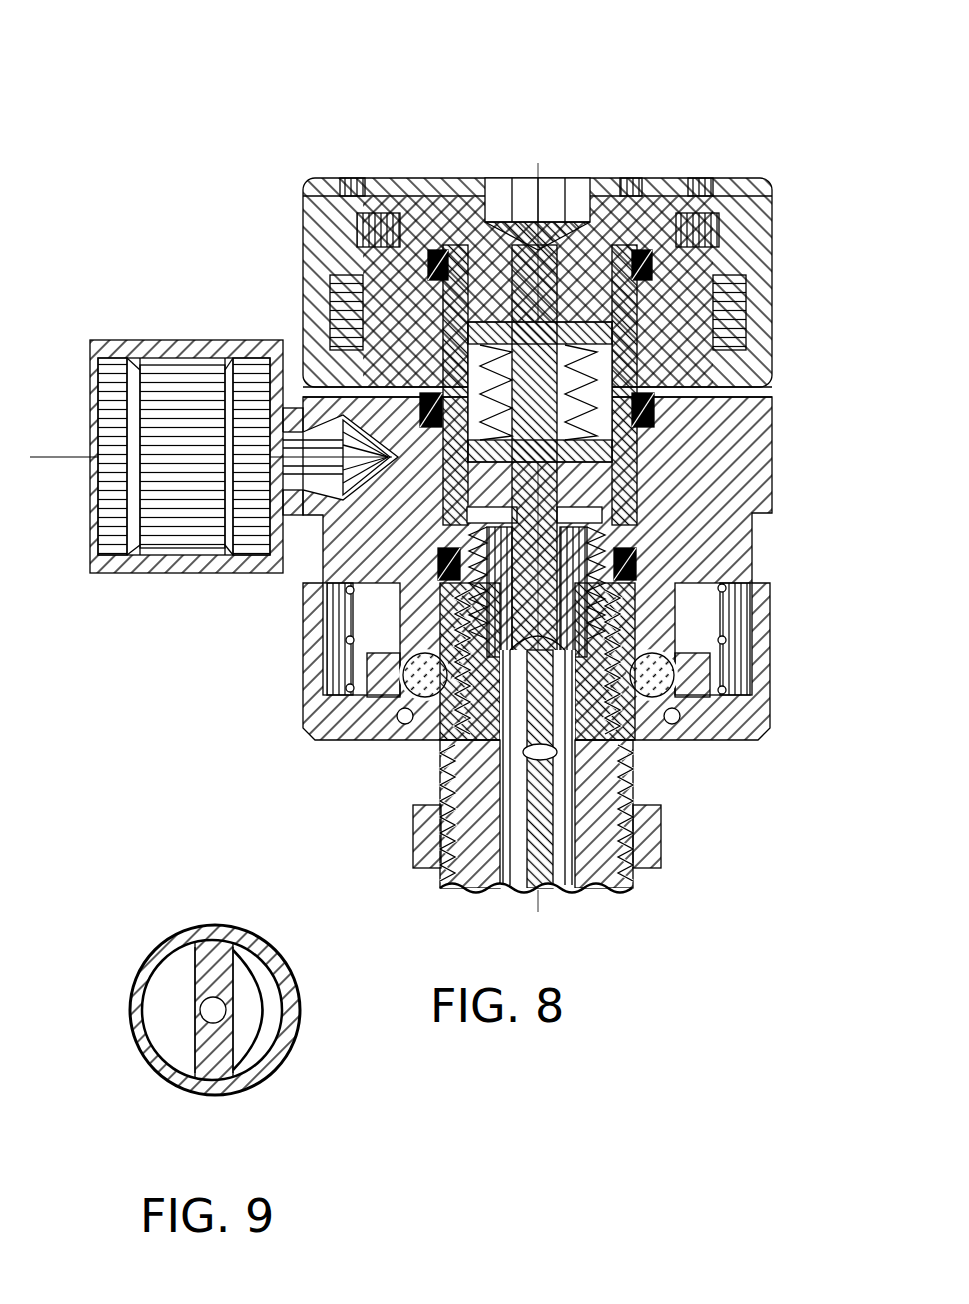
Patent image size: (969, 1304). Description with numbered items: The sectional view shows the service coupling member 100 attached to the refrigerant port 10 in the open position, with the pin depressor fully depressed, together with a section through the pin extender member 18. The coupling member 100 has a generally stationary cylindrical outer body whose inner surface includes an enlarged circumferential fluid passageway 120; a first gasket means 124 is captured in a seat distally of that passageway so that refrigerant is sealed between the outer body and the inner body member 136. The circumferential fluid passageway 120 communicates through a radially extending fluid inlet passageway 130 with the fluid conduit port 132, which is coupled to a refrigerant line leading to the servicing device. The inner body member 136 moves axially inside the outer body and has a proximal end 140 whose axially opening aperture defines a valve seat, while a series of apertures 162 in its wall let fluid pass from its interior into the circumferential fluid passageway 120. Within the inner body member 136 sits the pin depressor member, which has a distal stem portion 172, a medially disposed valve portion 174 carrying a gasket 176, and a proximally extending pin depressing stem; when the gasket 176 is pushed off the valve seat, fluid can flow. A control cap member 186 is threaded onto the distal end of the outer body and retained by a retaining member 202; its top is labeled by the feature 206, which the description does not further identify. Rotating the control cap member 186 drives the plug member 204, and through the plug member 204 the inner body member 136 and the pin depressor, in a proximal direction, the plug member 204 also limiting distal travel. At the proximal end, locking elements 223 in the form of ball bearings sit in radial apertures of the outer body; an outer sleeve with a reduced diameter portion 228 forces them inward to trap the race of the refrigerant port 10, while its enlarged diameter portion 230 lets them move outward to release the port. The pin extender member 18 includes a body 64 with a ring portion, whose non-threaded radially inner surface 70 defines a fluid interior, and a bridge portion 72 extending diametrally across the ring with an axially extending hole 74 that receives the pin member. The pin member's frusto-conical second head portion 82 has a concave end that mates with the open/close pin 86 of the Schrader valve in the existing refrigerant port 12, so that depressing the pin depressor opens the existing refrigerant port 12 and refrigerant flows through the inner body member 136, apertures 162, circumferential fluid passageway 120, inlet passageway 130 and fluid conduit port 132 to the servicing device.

In FIG. 8, the service coupling member 100 is at (712, 118).
In FIG. 8, the plug member 204 is at (462, 232).
In FIG. 8, the distal stem portion 172 is at (522, 245).
In FIG. 8, the knurled cap band 206 is at (608, 178).
In FIG. 8, the control cap member 186 is at (736, 180).
In FIG. 8, the fluid conduit port 132 is at (88, 390).
In FIG. 8, the apertures 162 is at (294, 411).
In FIG. 8, the radially extending fluid inlet passageway 130 is at (216, 418).
In FIG. 8, the first gasket means 124 is at (745, 255).
In FIG. 8, the retaining member 202 is at (768, 366).
In FIG. 8, the circumferential fluid passageway portion 120 is at (742, 392).
In FIG. 8, the inner body member 136 is at (640, 455).
In FIG. 8, the valve portion 174 is at (620, 488).
In FIG. 8, the gasket 176 is at (605, 500).
In FIG. 8, the proximal end 140 is at (645, 553).
In FIG. 8, the locking elements 223 is at (660, 677).
In FIG. 8, the reduced diameter portion 228 is at (672, 708).
In FIG. 8, the enlarged diameter portion 230 is at (672, 740).
In FIG. 8, the second head portion 82 is at (560, 728).
In FIG. 8, the open/close pin 86 is at (538, 880).
In FIG. 8, the refrigerant port 10 is at (662, 853).
In FIG. 8, the existing refrigerant port 12 is at (597, 872).
In FIG. 9, the pin extender member 18 is at (258, 905).
In FIG. 9, the bridge portion 72 is at (197, 968).
In FIG. 9, the axially extending hole 74 is at (200, 1012).
In FIG. 9, the body 64 is at (290, 1022).
In FIG. 9, the non-threaded radially inner surface 70 is at (287, 1057).